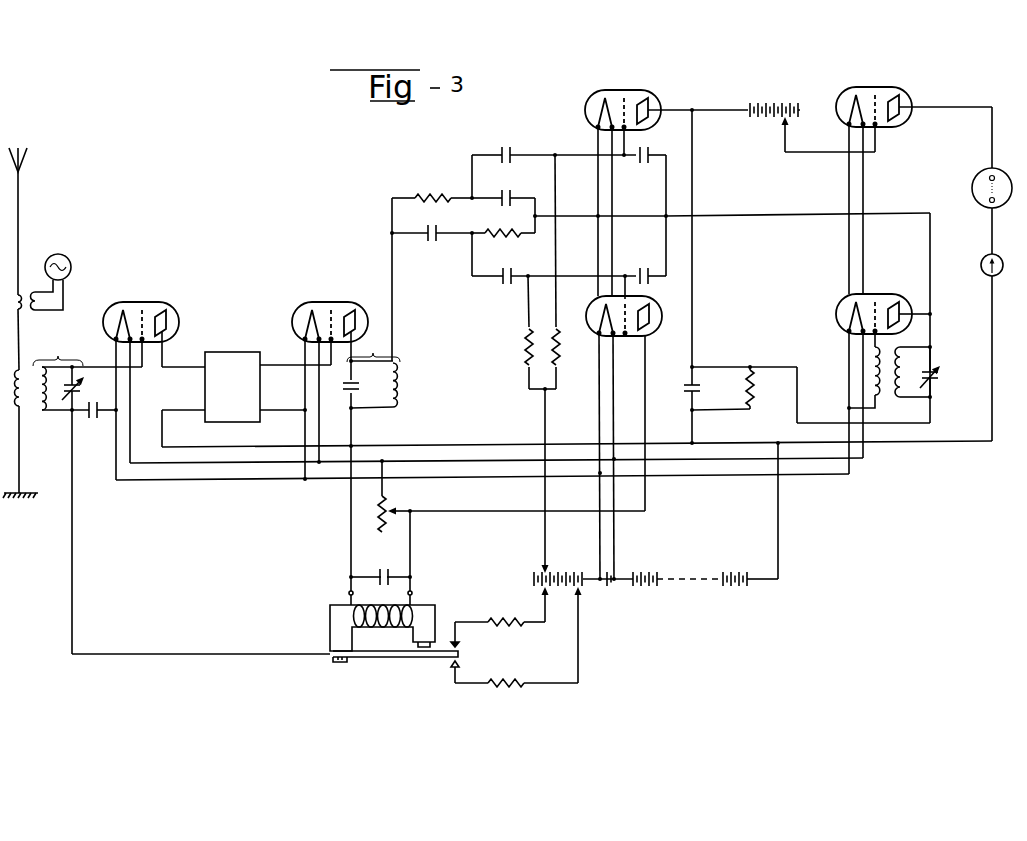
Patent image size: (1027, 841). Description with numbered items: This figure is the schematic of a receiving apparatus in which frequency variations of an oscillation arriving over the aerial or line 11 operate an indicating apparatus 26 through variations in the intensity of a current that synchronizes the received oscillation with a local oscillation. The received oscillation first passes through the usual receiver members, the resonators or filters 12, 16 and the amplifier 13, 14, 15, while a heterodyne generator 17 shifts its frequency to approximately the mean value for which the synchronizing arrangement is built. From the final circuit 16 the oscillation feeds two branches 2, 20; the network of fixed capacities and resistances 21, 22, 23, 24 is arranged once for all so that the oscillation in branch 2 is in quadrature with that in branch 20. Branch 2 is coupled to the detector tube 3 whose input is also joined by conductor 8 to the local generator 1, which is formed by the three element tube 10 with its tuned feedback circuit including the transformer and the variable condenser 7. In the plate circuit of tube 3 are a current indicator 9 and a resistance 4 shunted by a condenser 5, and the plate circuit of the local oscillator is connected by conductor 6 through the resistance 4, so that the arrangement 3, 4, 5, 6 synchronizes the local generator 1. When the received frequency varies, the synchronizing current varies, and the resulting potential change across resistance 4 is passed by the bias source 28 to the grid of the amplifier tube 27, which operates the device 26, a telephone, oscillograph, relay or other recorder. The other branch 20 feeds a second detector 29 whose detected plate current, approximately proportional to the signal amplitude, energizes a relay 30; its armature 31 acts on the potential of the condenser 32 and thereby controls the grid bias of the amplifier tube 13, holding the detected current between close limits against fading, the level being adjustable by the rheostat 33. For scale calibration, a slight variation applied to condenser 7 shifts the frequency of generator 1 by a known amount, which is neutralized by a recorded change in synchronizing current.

The local generator 1 is at (896, 345).
The branch 2 is at (486, 153).
The detector tube 3 is at (647, 93).
The resistance 4 is at (757, 393).
The condenser 5 is at (698, 388).
The conductor 6 is at (800, 392).
The variable condenser 7 is at (938, 380).
The conductor 8 is at (780, 215).
The current indicator 9 is at (981, 265).
The three element tube 10 is at (893, 297).
The aerial or line 11 is at (19, 193).
The resonator or filter 12 is at (61, 372).
The amplifier tube 13 is at (163, 303).
The amplifier 14 is at (230, 357).
The amplifier 15 is at (352, 303).
The final circuit 16 is at (371, 371).
The heterodyne generator 17 is at (70, 260).
The branch 20 is at (488, 281).
The resistance 21 is at (436, 195).
The fixed capacity 22 is at (512, 197).
The fixed capacity 23 is at (428, 242).
The resistance 24 is at (506, 237).
The indicating apparatus 26 is at (972, 187).
The amplifier tube 27 is at (894, 93).
The bias source 28 is at (773, 108).
The second detector 29 is at (650, 298).
The relay 30 is at (330, 620).
The armature 31 is at (404, 655).
The condenser 32 is at (92, 420).
The rheostat 33 is at (396, 509).